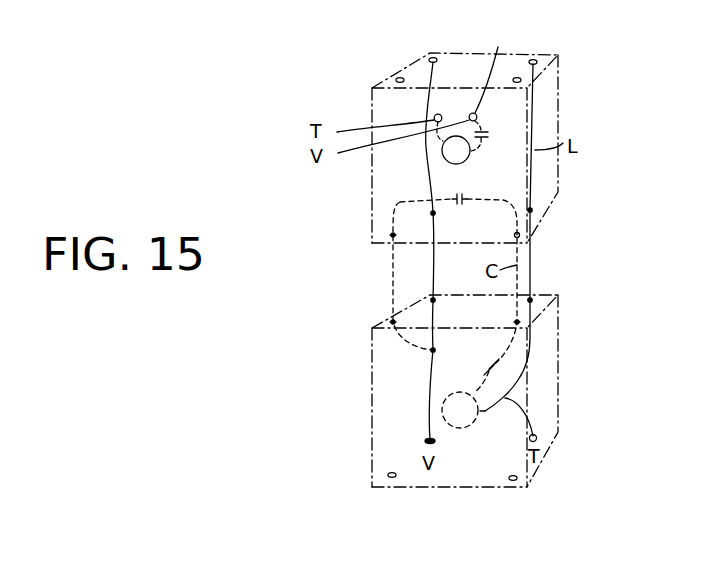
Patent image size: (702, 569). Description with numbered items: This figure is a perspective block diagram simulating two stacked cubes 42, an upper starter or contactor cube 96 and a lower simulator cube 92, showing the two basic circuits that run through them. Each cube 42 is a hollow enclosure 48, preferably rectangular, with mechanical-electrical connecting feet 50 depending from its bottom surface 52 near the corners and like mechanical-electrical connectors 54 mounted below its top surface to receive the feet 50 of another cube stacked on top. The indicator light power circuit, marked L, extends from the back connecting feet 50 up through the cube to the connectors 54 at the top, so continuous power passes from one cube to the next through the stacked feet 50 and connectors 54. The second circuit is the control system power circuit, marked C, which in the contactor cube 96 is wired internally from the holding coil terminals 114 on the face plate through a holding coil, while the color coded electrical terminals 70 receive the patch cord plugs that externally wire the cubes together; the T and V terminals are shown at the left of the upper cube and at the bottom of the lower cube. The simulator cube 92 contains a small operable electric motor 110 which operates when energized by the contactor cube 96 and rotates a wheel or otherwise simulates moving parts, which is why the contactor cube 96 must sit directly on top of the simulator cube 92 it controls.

The cube 42 is at (574, 92).
The simulator cube 92 is at (567, 373).
The hollow enclosure 48 is at (558, 182).
The bottom surface 52 is at (392, 489).
The mechanical-electrical connectors 54 is at (433, 46).
The holding coil terminals 114 is at (508, 69).
The starter or contactor cube 96 is at (422, 162).
The color coded electrical terminals 70 is at (510, 126).
The mechanical-electrical connecting feet 50 is at (390, 241).
The electric motor 110 is at (470, 428).